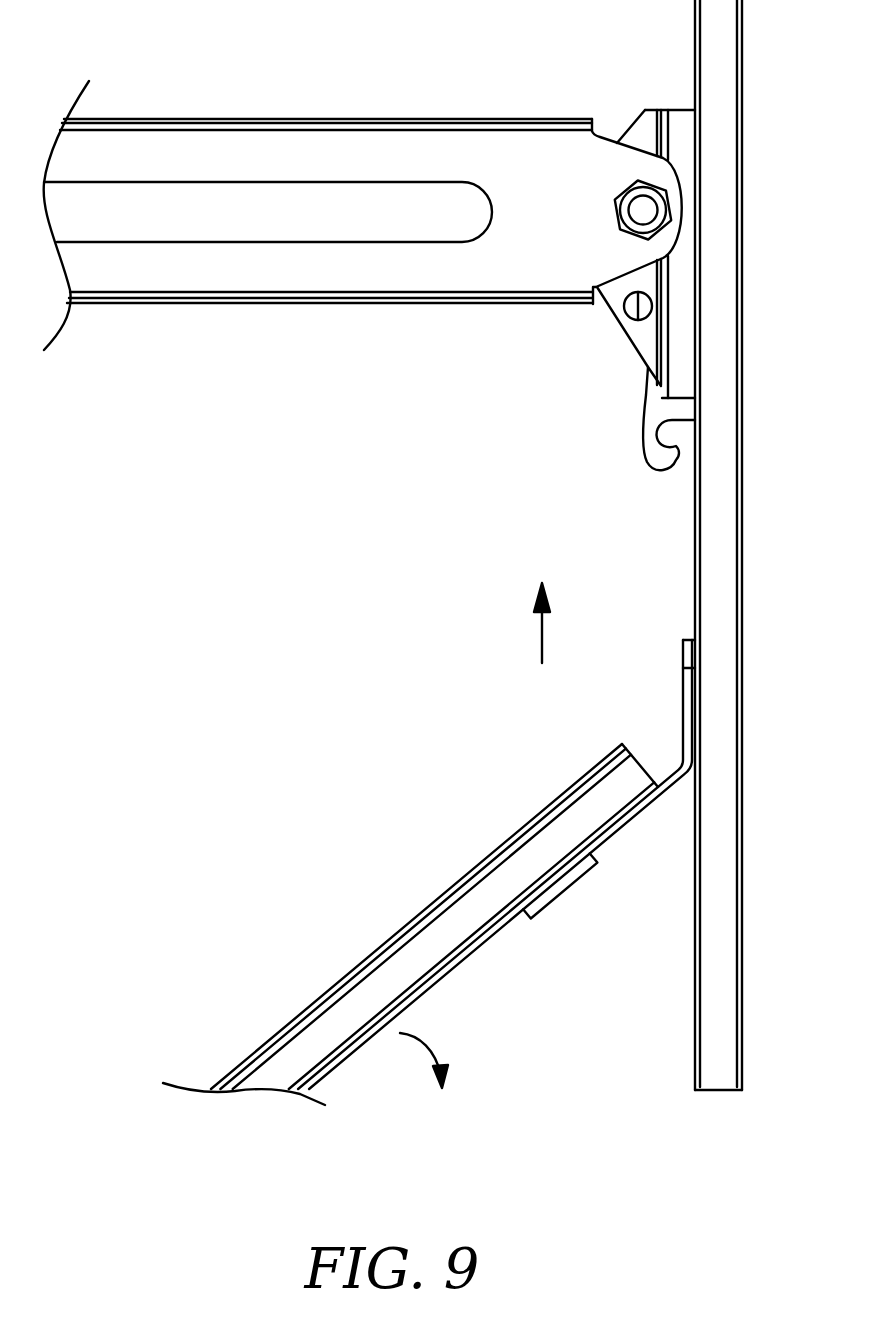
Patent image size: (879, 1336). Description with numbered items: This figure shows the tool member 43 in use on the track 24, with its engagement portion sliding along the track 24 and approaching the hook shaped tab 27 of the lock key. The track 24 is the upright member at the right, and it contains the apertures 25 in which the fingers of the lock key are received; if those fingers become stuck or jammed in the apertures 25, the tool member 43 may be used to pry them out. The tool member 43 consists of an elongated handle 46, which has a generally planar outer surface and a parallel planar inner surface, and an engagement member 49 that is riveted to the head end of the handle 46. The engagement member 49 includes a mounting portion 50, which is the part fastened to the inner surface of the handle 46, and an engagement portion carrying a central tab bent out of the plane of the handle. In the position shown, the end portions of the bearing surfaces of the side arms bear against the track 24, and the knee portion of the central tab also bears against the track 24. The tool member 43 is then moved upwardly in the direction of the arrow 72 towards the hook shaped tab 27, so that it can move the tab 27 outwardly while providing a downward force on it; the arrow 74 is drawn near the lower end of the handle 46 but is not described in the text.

The track 24 is at (712, 545).
The apertures 25 is at (697, 556).
The hook shaped tab 27 is at (645, 434).
The tool member 43 is at (429, 872).
The elongated handle 46 is at (510, 838).
The engagement member 49 is at (633, 835).
The mounting portion 50 is at (555, 898).
The arrow 72 is at (538, 636).
The rotation arrow 74 is at (425, 1042).